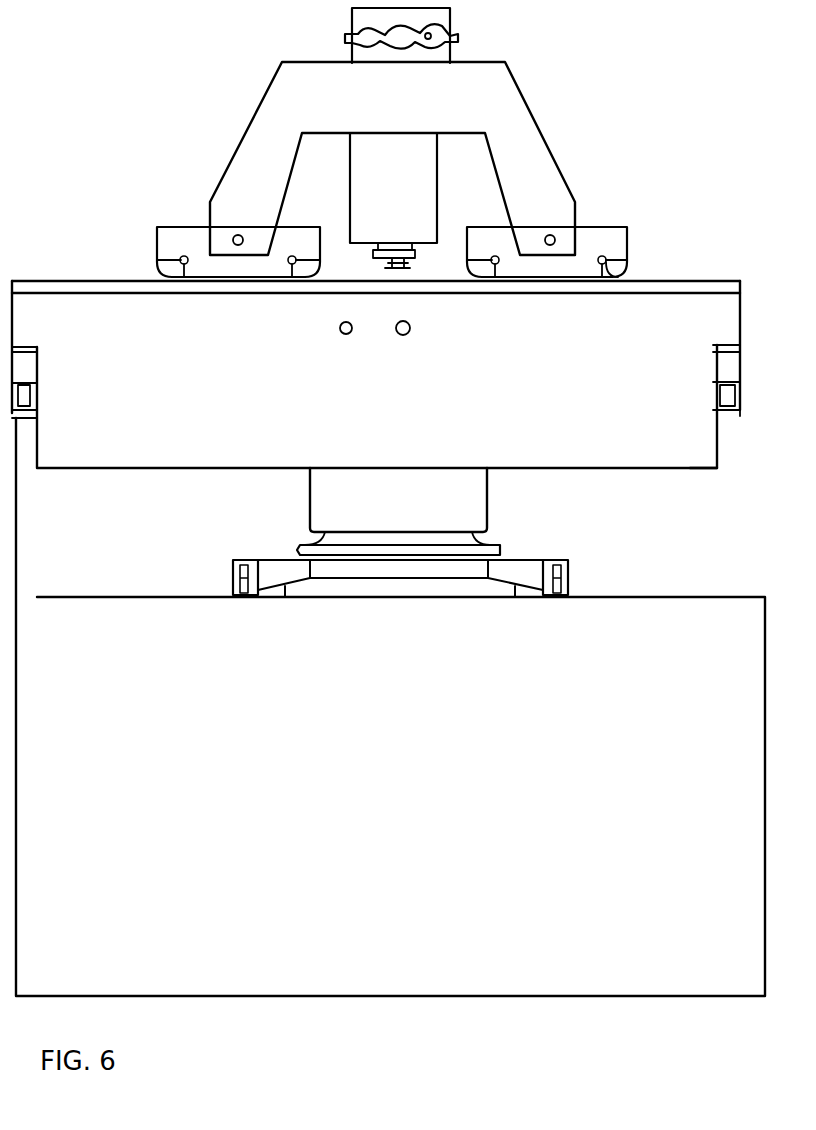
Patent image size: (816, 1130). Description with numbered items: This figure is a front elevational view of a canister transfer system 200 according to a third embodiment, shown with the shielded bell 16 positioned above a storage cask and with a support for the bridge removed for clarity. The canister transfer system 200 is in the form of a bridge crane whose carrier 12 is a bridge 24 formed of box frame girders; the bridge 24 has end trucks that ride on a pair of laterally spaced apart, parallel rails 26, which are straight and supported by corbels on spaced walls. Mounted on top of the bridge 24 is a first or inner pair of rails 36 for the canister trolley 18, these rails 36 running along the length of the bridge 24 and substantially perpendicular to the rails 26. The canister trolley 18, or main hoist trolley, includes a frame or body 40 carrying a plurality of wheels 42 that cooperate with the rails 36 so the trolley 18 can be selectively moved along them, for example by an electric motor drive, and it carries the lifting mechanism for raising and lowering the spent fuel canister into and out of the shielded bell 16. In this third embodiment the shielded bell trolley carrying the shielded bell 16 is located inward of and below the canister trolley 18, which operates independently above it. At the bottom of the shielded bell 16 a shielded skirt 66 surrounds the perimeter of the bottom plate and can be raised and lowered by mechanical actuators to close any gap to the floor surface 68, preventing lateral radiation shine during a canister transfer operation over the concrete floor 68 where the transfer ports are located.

The canister transfer system 200 is at (82, 178).
The canister trolley 18 is at (556, 160).
The frame or body 40 is at (600, 227).
The wheels 42 is at (630, 273).
The first or inner pair of rails 36 is at (668, 282).
The carrier 12 is at (648, 470).
The bridge 24 is at (690, 470).
The rails 26 is at (37, 420).
The shielded bell 16 is at (487, 497).
The shielded skirt 66 is at (500, 551).
The floor surface 68 is at (658, 597).